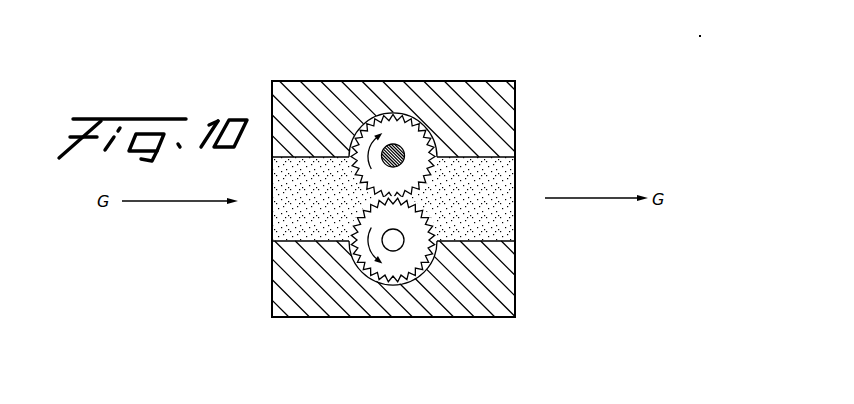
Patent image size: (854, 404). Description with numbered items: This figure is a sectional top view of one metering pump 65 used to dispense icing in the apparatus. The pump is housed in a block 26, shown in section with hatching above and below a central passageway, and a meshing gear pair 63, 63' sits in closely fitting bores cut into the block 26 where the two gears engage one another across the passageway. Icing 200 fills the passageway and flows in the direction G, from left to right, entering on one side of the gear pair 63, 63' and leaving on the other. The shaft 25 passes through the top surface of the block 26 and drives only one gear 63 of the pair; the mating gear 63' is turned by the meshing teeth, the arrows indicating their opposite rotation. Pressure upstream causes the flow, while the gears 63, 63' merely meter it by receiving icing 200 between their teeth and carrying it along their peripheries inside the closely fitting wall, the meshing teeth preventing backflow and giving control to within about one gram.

The metering pump 65 is at (346, 74).
The metering pump gear 63 is at (404, 114).
The metering pump gear 63' is at (383, 286).
The shaft 25 is at (402, 149).
The block 26 is at (498, 103).
The icing 200 is at (505, 176).